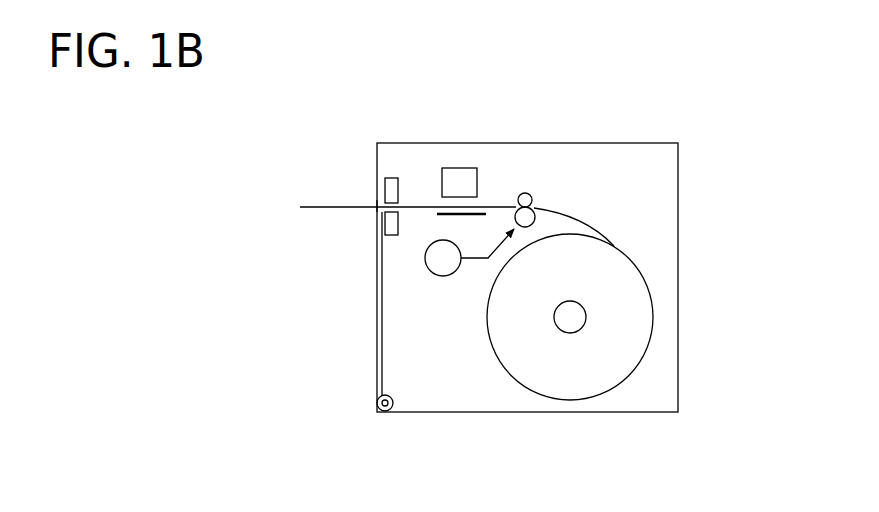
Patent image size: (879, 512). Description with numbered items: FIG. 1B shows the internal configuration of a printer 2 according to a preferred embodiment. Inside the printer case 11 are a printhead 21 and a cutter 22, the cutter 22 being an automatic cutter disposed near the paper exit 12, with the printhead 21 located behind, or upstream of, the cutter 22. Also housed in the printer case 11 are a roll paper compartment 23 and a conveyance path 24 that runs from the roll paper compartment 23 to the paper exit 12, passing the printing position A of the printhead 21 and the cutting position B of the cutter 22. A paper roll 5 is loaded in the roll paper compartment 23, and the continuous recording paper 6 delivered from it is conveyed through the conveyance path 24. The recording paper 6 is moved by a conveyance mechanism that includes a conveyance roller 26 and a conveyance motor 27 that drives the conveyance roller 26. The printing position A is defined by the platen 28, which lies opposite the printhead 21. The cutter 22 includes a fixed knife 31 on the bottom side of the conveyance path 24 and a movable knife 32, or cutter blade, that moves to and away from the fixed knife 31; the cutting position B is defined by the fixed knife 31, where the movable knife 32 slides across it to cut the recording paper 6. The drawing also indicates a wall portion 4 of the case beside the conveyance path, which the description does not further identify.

The printer 2 is at (724, 148).
The cartridge case wall 4 is at (377, 347).
The paper roll 5 is at (627, 362).
The recording paper 6 is at (313, 206).
The printer case 11 is at (638, 143).
The paper exit 12 is at (375, 206).
The printhead 21 is at (472, 169).
The cutter 22 is at (394, 165).
The roll paper compartment 23 is at (655, 332).
The conveyance path 24 is at (555, 207).
The conveyance roller 26 is at (516, 222).
The conveyance motor 27 is at (425, 262).
The platen 28 is at (461, 212).
The fixed knife 31 is at (377, 222).
The movable knife 32 is at (399, 191).
The printing position A is at (459, 192).
The cutting position B is at (390, 194).